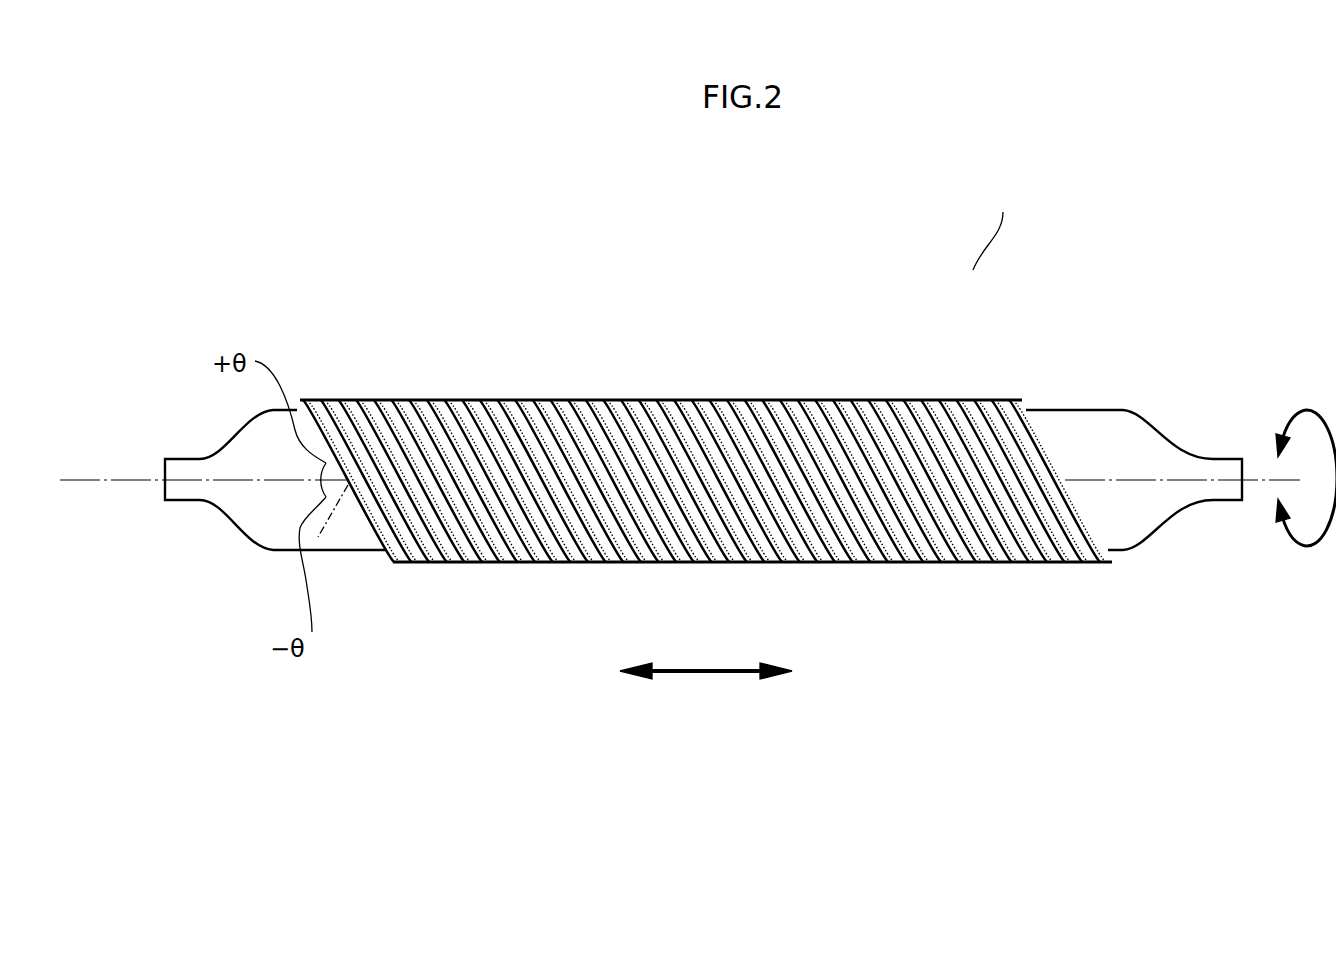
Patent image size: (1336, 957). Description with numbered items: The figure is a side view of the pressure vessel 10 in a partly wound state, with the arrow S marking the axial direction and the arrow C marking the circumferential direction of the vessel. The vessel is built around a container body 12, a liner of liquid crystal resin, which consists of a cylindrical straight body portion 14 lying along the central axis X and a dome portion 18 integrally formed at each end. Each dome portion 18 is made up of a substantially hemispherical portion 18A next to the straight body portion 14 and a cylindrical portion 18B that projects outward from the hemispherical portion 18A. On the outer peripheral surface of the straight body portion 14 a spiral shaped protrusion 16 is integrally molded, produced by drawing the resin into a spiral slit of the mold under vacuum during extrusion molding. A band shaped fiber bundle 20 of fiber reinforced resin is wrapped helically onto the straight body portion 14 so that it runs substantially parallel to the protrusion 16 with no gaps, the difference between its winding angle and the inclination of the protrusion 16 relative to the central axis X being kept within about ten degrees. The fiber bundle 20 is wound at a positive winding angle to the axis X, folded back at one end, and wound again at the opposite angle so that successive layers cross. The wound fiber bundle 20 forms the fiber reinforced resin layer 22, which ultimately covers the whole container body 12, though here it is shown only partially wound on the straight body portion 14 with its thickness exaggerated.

The pressure vessel 10 is at (972, 272).
The container body 12 is at (1040, 405).
The straight body portion 14 is at (702, 435).
The protrusion 16 is at (963, 398).
The dome portion 18 is at (690, 543).
The hemispherical portion 18A is at (225, 521).
The cylindrical portion 18B is at (250, 622).
The fiber bundle 20 is at (318, 398).
The fiber reinforced resin layer 22 is at (531, 398).
The central axis X is at (101, 480).
The circumferential direction C is at (1307, 408).
The axial direction S is at (700, 674).